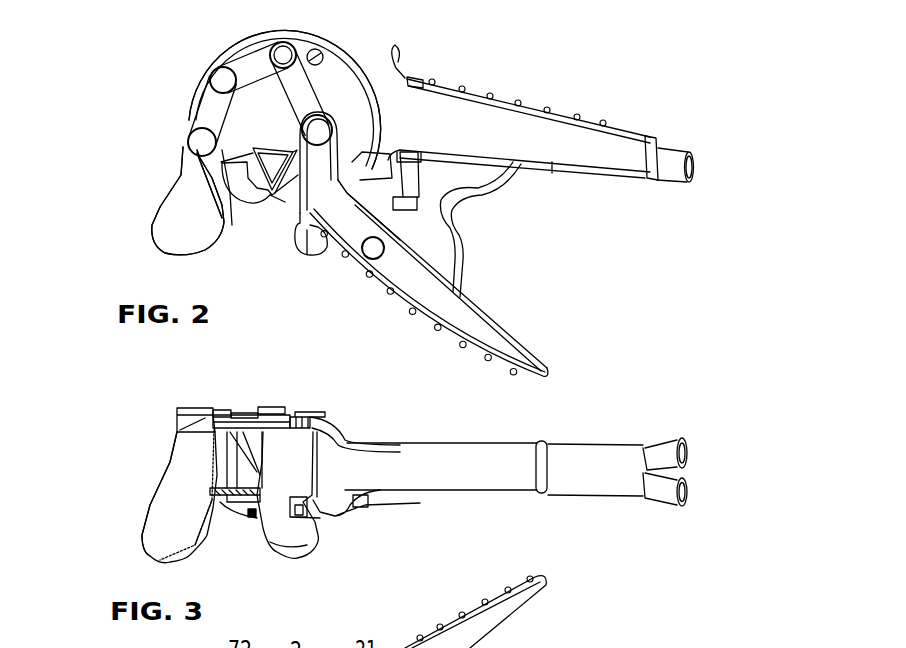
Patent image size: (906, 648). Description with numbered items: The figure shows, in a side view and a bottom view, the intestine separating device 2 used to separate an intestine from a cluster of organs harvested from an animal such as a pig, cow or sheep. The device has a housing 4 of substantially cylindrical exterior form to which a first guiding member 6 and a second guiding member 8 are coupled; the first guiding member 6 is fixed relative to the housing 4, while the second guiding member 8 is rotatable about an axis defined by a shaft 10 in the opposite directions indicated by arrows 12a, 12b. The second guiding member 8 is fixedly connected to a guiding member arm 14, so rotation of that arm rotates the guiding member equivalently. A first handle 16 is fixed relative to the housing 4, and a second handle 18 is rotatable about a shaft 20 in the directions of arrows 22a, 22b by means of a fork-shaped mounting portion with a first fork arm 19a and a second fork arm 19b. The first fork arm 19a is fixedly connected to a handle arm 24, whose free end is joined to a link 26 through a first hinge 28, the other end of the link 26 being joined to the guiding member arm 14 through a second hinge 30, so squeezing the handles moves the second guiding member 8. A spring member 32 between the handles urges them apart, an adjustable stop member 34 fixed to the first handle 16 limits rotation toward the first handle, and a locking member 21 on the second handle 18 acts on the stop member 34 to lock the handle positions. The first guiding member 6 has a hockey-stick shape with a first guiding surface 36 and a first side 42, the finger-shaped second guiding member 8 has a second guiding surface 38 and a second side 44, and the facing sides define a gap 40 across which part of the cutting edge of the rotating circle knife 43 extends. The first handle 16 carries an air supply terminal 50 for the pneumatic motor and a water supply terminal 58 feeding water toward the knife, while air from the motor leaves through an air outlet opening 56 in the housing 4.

In FIG. 2, the intestine separating device 2 is at (94, 103).
In FIG. 3, the intestine separating device 2 is at (95, 450).
In FIG. 2, the housing 4 is at (342, 54).
In FIG. 2, the first guiding member 6 is at (308, 255).
In FIG. 3, the first guiding member 6 is at (320, 538).
In FIG. 2, the second guiding member 8 is at (221, 233).
In FIG. 3, the second guiding member 8 is at (143, 523).
In FIG. 2, the shaft 10 is at (188, 142).
In FIG. 3, the shaft 10 is at (183, 408).
In FIG. 2, the arrow 12a is at (178, 106).
In FIG. 2, the arrow 12b is at (178, 167).
In FIG. 2, the guiding member arm 14 is at (205, 100).
In FIG. 2, the first handle 16 is at (560, 125).
In FIG. 3, the first handle 16 is at (587, 460).
In FIG. 2, the second handle 18 is at (495, 336).
In FIG. 3, the second handle 18 is at (440, 460).
In FIG. 2, the first fork arm 19a is at (319, 170).
In FIG. 3, the first fork arm 19a is at (340, 430).
In FIG. 3, the second fork arm 19b is at (355, 516).
In FIG. 2, the shaft 20 is at (340, 122).
In FIG. 3, the shaft 20 is at (307, 413).
In FIG. 2, the locking member 21 is at (386, 246).
In FIG. 2, the arrow 22a is at (333, 130).
In FIG. 2, the arrow 22b is at (332, 93).
In FIG. 2, the handle arm 24 is at (291, 95).
In FIG. 2, the link 26 is at (244, 62).
In FIG. 3, the link 26 is at (242, 413).
In FIG. 2, the first hinge 28 is at (284, 43).
In FIG. 3, the first hinge 28 is at (267, 413).
In FIG. 2, the second hinge 30 is at (225, 68).
In FIG. 3, the second hinge 30 is at (220, 412).
In FIG. 2, the spring member 32 is at (457, 254).
In FIG. 2, the adjustable stop member 34 is at (412, 180).
In FIG. 2, the first guiding surface 36 is at (272, 224).
In FIG. 3, the first guiding surface 36 is at (276, 532).
In FIG. 2, the second guiding surface 38 is at (176, 222).
In FIG. 3, the second guiding surface 38 is at (170, 503).
In FIG. 2, the gap 40 is at (260, 227).
In FIG. 3, the gap 40 is at (237, 547).
In FIG. 3, the first side 42 is at (249, 518).
In FIG. 2, the circle knife 43 is at (237, 176).
In FIG. 3, the second side 44 is at (216, 517).
In FIG. 2, the air supply terminal 50 is at (667, 168).
In FIG. 3, the air supply terminal 50 is at (660, 448).
In FIG. 2, the air outlet opening 56 is at (320, 49).
In FIG. 3, the water supply terminal 58 is at (663, 490).